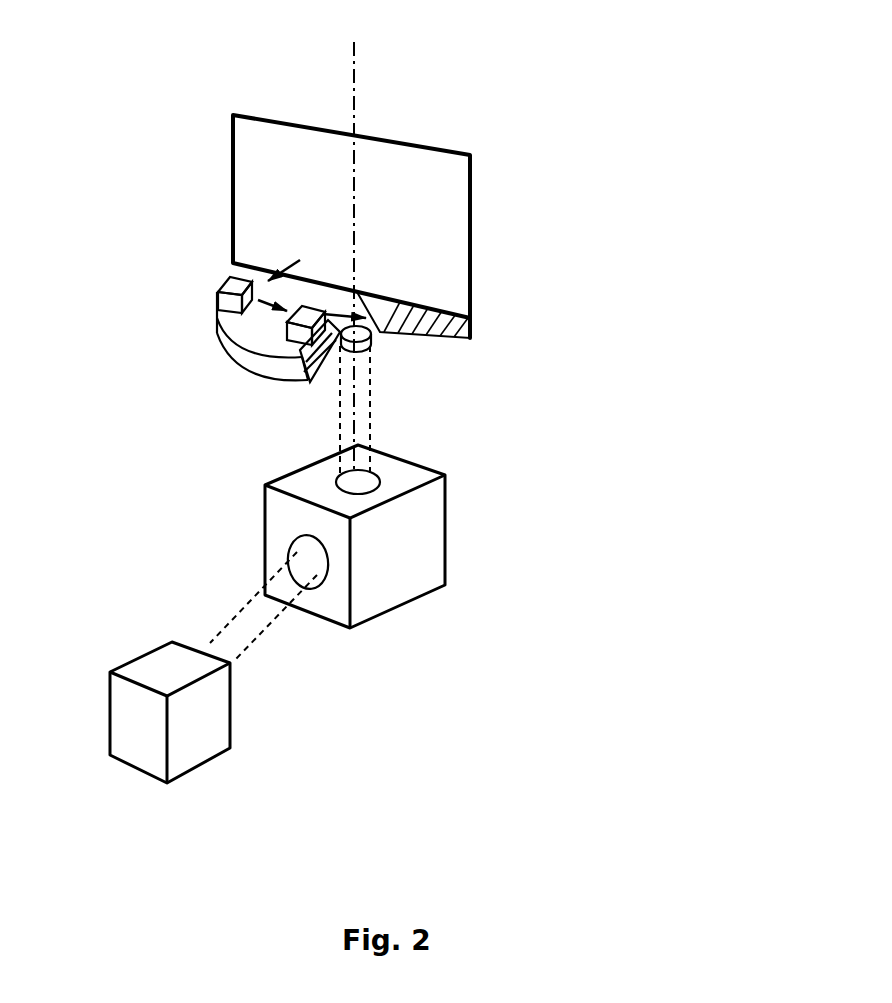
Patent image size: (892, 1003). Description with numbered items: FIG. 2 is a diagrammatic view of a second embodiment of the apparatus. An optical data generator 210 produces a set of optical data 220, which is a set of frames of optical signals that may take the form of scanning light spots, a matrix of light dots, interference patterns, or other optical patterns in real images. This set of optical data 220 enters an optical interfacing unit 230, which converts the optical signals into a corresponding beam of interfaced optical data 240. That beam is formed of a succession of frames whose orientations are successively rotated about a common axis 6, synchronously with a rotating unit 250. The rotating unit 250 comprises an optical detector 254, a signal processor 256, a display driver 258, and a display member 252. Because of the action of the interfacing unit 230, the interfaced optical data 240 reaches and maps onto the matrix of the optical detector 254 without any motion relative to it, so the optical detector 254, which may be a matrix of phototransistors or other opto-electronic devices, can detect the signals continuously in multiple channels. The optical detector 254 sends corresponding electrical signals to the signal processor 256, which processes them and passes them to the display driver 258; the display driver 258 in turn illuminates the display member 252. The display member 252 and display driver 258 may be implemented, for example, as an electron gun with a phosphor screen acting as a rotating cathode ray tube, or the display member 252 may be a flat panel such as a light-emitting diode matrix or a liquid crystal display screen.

The common axis 6 is at (383, 43).
The optical data generator 210 is at (222, 766).
The set of optical data 220 is at (275, 637).
The optical interfacing unit 230 is at (455, 563).
The interfaced optical data 240 is at (390, 397).
The rotating unit 250 is at (545, 245).
The display member 252 is at (447, 169).
The optical detector 254 is at (338, 354).
The signal processor 256 is at (292, 338).
The display driver 258 is at (214, 302).